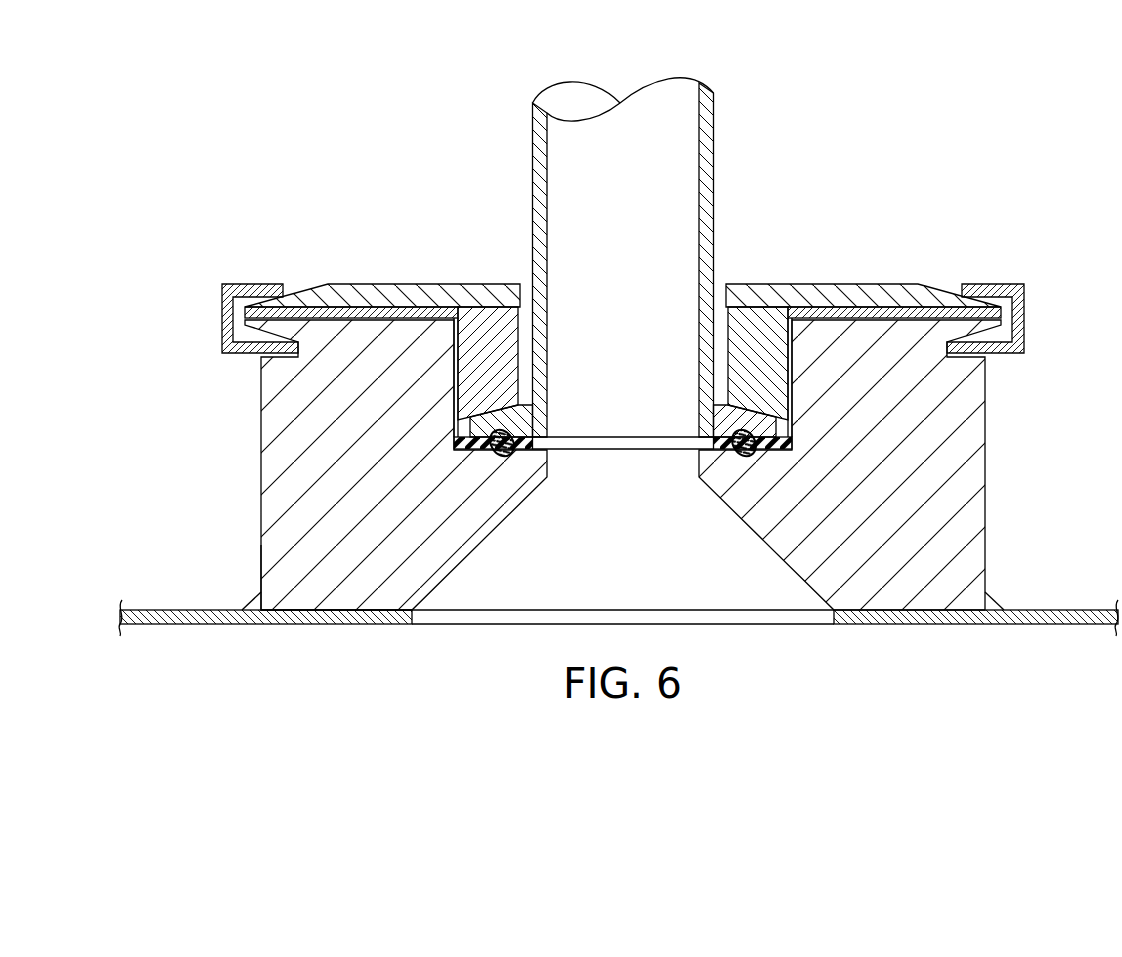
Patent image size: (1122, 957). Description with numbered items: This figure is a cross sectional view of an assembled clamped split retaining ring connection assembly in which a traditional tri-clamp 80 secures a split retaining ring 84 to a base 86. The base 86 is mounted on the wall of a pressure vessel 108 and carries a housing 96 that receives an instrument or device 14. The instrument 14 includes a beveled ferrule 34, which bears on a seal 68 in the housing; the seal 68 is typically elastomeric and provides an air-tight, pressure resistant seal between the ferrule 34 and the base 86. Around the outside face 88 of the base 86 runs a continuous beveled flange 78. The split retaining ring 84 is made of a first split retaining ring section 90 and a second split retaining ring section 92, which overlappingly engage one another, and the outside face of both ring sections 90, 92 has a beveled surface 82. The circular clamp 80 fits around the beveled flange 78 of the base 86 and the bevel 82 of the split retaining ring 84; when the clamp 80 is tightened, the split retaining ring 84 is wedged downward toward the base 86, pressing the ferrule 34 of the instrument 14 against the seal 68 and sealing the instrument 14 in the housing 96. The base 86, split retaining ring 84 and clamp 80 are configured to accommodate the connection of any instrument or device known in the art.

The instrument 14 is at (714, 160).
The ferrule 34 is at (714, 424).
The seal 68 is at (720, 452).
The beveled flange 78 is at (258, 340).
The tri-clamp 80 is at (1026, 302).
The beveled surface 82 is at (297, 284).
The split retaining ring 84 is at (830, 255).
The base 86 is at (260, 462).
The outside face 88 is at (260, 545).
The first split retaining ring section 90 is at (738, 350).
The second split retaining ring section 92 is at (498, 330).
The housing 96 is at (792, 428).
The pressure vessel 108 is at (948, 624).